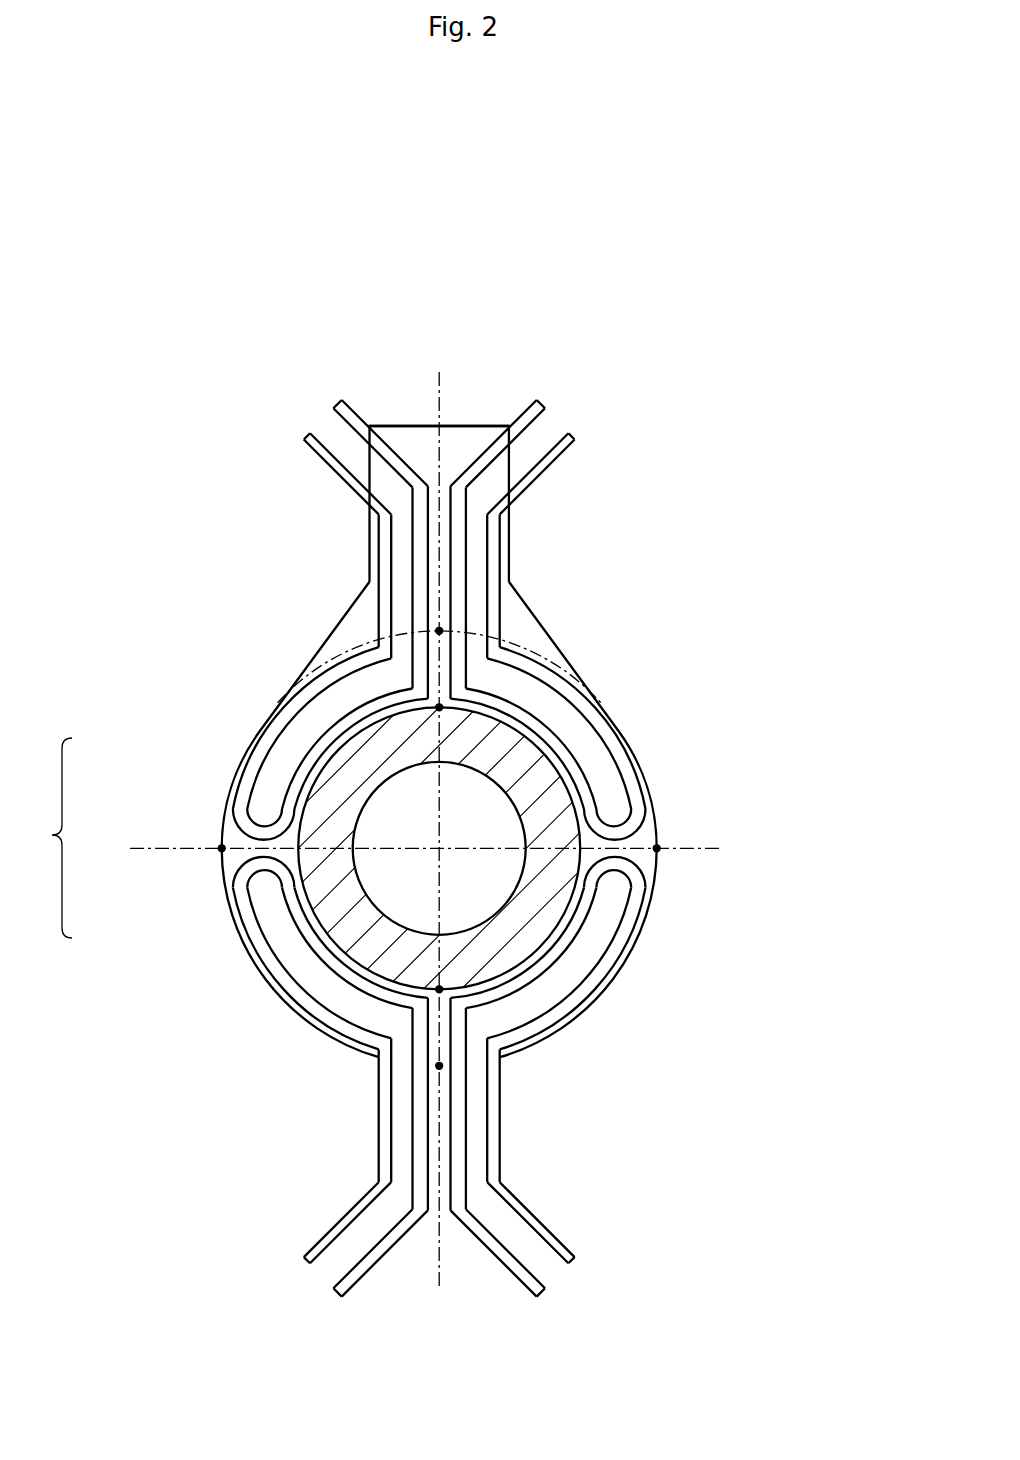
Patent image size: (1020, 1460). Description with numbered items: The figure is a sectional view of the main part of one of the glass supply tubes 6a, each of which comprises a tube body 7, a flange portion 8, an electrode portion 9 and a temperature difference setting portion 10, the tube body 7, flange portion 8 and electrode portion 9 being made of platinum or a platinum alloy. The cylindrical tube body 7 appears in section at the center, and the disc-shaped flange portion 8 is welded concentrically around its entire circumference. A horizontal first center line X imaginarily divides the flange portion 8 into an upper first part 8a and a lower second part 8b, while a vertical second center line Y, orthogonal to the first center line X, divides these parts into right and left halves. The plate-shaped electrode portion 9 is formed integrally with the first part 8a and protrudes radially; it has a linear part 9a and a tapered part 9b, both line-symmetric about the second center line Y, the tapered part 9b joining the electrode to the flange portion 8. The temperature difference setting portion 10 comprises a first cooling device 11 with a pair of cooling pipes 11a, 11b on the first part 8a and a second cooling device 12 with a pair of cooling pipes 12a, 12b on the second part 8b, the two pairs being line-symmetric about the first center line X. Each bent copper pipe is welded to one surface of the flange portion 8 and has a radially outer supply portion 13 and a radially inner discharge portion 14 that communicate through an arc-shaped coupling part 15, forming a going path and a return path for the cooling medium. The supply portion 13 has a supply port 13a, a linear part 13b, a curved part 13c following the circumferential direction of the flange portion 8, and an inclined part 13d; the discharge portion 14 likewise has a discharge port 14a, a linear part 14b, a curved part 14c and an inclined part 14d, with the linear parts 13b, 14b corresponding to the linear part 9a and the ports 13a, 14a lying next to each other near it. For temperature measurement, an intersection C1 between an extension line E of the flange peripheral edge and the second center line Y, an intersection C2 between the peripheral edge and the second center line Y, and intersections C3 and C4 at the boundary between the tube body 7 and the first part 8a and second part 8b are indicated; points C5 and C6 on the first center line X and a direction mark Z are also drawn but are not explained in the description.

The glass supply tube 6a is at (661, 296).
The tube body 7 is at (535, 772).
The flange portion 8 is at (654, 907).
The first part 8a is at (647, 776).
The second part 8b is at (615, 974).
The electrode portion 9 is at (457, 414).
The linear part 9a is at (413, 440).
The tapered part 9b is at (551, 632).
The temperature difference setting portion 10 is at (47, 838).
The first cooling device 11 is at (216, 774).
The cooling pipe 11a is at (331, 511).
The cooling pipe 11b is at (547, 511).
The second cooling device 12 is at (208, 937).
The cooling pipe 12a is at (371, 1121).
The cooling pipe 12b is at (507, 1121).
The supply portion 13 is at (438, 865).
The supply port 13a is at (301, 437).
The linear part 13b is at (385, 548).
The curved part 13c is at (308, 694).
The inclined part 13d is at (343, 476).
The discharge portion 14 is at (449, 848).
The discharge port 14a is at (338, 398).
The linear part 14b is at (421, 580).
The curved part 14c is at (305, 764).
The inclined part 14d is at (374, 440).
The coupling part 15 is at (226, 843).
The intersection C1 is at (442, 629).
The intersection C2 is at (442, 1065).
The intersection C3 is at (441, 710).
The intersection C4 is at (437, 992).
The center point C5 is at (219, 849).
The center point C6 is at (659, 848).
The extension line E is at (347, 651).
The first center line X is at (738, 862).
The second center line Y is at (815, 172).
The Z axis Z is at (815, 172).